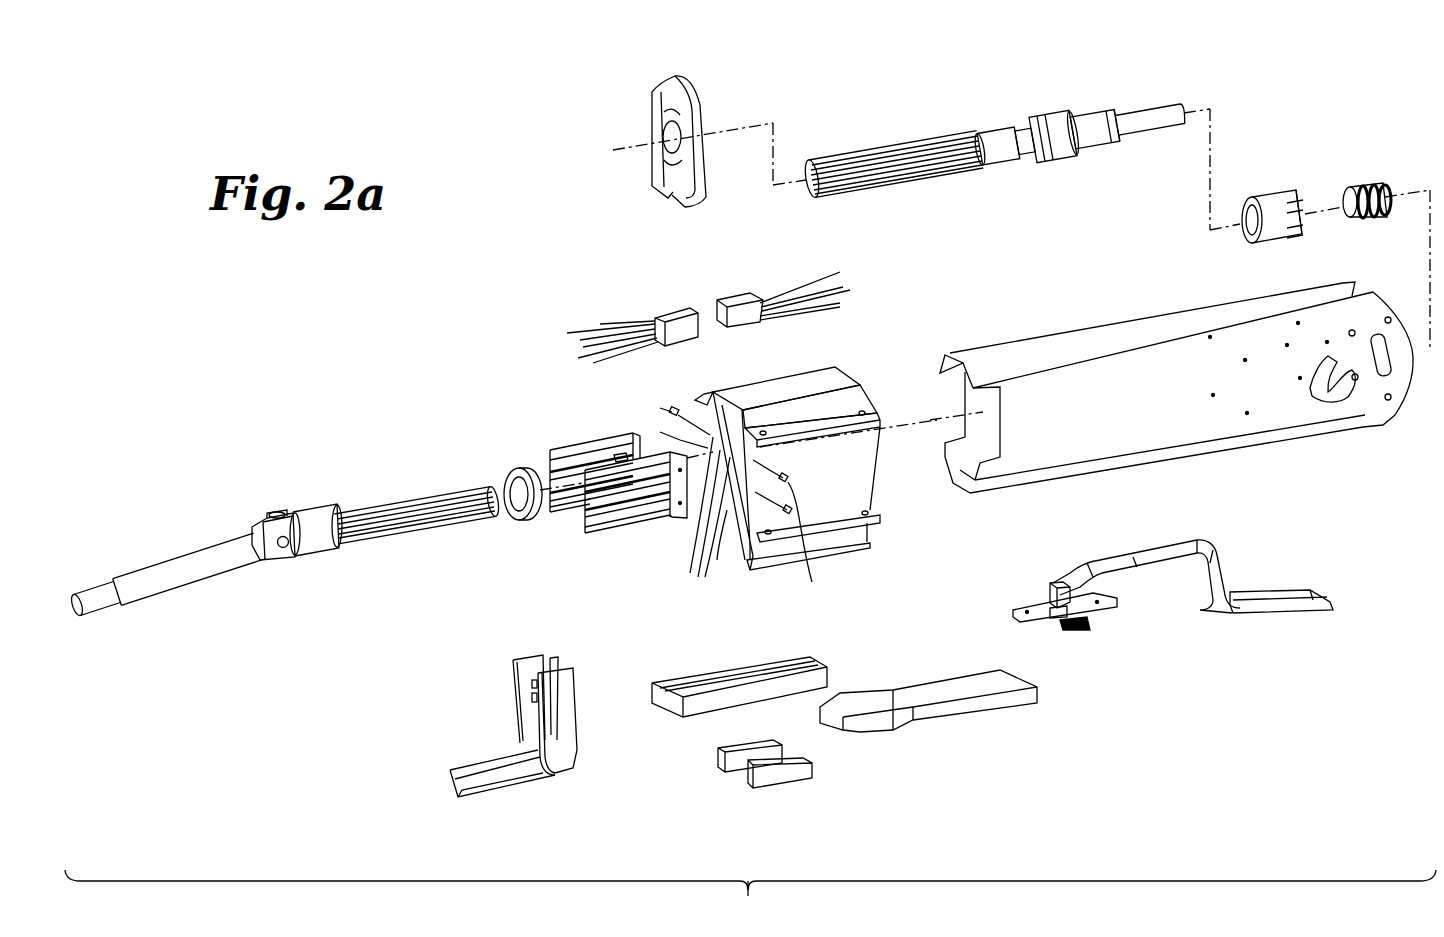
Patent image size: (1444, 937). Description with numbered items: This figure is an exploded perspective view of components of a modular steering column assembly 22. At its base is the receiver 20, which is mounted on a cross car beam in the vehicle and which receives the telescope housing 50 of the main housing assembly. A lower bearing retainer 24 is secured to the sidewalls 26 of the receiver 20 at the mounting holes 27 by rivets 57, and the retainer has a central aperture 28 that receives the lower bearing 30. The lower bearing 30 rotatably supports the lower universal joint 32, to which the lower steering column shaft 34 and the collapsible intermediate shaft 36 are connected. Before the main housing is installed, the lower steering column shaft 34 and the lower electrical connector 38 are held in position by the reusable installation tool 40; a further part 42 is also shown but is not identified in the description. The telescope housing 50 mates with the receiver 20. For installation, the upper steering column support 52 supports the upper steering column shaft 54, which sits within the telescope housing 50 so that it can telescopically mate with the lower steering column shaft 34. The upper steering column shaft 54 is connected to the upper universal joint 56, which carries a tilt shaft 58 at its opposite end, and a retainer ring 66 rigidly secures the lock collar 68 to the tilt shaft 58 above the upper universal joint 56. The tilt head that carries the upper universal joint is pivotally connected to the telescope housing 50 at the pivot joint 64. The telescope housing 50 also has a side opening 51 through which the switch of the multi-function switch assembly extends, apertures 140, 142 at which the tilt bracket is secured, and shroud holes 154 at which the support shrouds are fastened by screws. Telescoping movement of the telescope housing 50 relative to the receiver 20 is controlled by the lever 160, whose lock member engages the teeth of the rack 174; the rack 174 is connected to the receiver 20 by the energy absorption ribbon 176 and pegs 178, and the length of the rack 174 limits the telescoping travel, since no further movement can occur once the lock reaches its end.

The receiver 20 is at (840, 352).
The steering column assembly 22 is at (1250, 92).
The lower bearing retainer 24 is at (630, 537).
The sidewalls 26 is at (863, 485).
The mounting holes 27 is at (701, 527).
The central aperture 28 is at (617, 455).
The lower bearing 30 is at (530, 522).
The lower universal joint 32 is at (297, 560).
The lower steering column shaft 34 is at (408, 498).
The collapsible intermediate shaft 36 is at (180, 587).
The lower electrical connector 38 is at (663, 305).
The reusable installation tool 40 is at (565, 773).
The electrical connector 42 is at (737, 295).
The telescope housing 50 is at (1218, 458).
The side opening 51 is at (1390, 375).
The upper steering column support 52 is at (667, 78).
The upper steering column shaft 54 is at (895, 147).
The upper universal joint 56 is at (1050, 117).
The rivets 57 is at (660, 408).
The tilt shaft 58 is at (1127, 106).
The pivot joint 64 is at (1333, 362).
The retainer ring 66 is at (1358, 187).
The lock collar 68 is at (1280, 197).
The apertures 140 is at (1389, 320).
The apertures 142 is at (1388, 400).
The shroud holes 154 is at (1335, 397).
The lever 160 is at (1290, 625).
The rack 174 is at (683, 683).
The energy absorption ribbon 176 is at (980, 717).
The pegs 178 is at (797, 777).